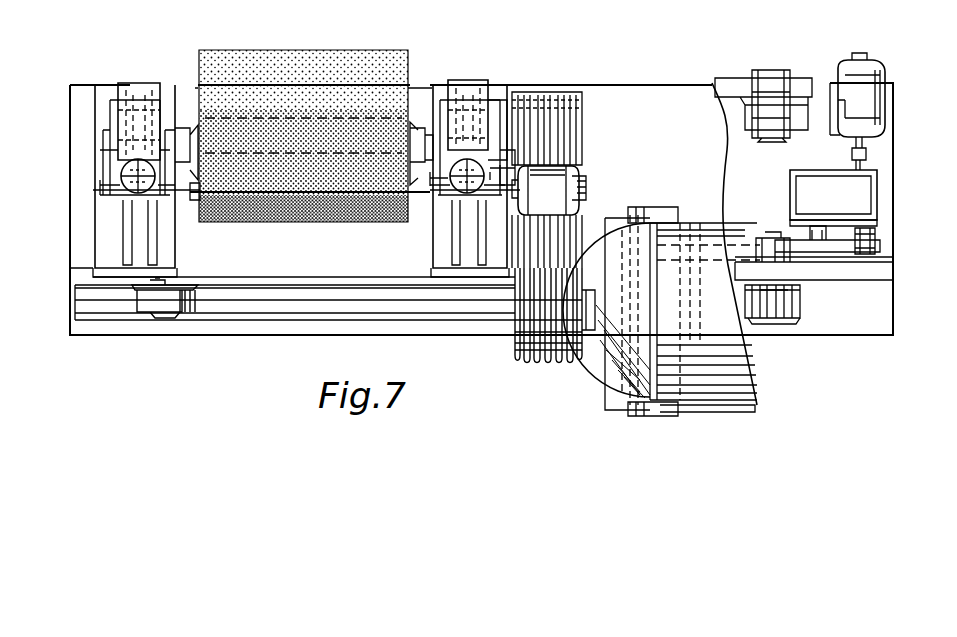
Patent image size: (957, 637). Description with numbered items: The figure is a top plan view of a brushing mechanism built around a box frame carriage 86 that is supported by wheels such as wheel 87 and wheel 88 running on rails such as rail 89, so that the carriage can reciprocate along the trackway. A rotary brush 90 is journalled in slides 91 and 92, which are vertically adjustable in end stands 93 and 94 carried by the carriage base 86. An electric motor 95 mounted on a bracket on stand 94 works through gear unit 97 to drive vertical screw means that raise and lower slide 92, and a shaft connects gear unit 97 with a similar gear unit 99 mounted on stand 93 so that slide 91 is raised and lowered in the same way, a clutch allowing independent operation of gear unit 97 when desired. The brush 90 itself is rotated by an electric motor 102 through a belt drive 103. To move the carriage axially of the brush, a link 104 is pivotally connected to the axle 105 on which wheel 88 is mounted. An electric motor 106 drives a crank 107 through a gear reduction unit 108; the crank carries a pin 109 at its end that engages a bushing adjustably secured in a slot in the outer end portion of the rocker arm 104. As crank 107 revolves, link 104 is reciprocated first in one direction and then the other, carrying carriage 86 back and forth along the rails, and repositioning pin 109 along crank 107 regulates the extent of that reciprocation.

The box frame carriage 86 is at (72, 190).
The wheel 87 is at (160, 316).
The wheel 88 is at (797, 282).
The rail 89 is at (280, 320).
The rotary brush 90 is at (342, 50).
The slide 91 is at (120, 106).
The slide 92 is at (487, 102).
The end stand 93 is at (140, 96).
The end stand 94 is at (460, 96).
The electric motor 95 is at (584, 188).
The gear unit 97 is at (460, 182).
The gear unit 99 is at (130, 185).
The electric motor 102 is at (720, 380).
The belt drive 103 is at (552, 358).
The link 104 is at (828, 250).
The axle 105 is at (771, 238).
The electric motor 106 is at (880, 108).
The crank 107 is at (870, 240).
The gear reduction unit 108 is at (858, 203).
The pin 109 is at (888, 257).